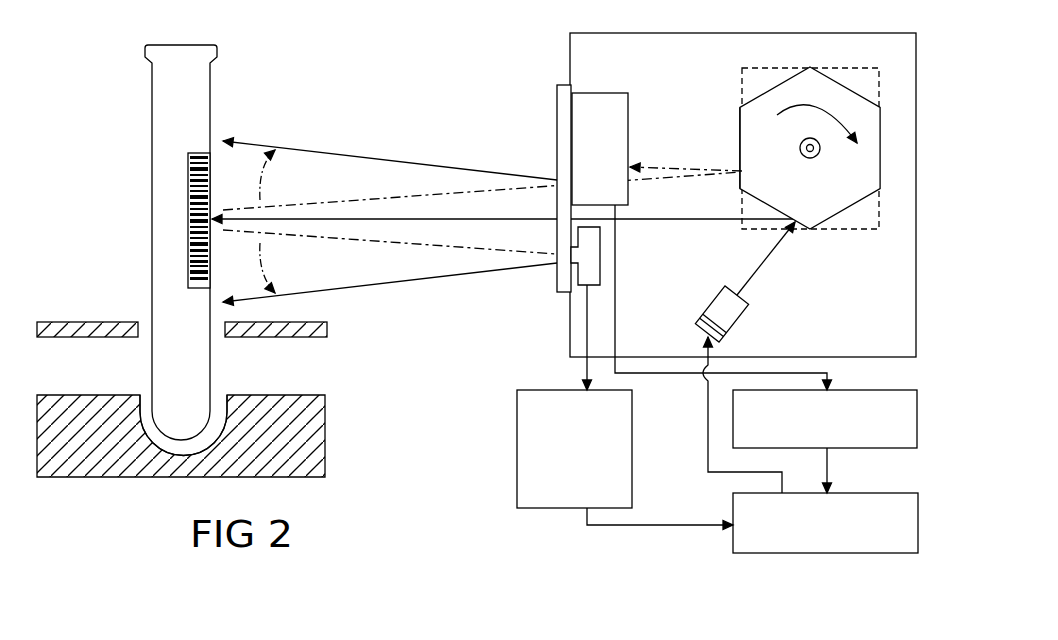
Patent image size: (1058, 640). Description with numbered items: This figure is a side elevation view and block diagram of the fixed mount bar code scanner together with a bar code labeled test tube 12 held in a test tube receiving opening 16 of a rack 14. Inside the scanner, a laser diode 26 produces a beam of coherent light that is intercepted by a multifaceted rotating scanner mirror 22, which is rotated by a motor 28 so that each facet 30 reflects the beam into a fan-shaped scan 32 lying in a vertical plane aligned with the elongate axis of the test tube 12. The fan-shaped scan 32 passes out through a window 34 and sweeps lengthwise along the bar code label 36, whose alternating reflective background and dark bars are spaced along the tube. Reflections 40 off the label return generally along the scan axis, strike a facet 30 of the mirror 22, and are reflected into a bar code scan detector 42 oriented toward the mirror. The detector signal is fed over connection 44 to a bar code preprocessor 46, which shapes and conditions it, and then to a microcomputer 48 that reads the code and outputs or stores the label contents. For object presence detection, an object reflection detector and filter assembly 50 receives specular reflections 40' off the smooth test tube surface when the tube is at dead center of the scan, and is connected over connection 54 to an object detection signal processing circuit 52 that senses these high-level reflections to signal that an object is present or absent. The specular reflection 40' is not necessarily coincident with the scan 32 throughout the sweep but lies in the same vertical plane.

The test tube 12 is at (213, 86).
The rack 14 is at (300, 340).
The test tube receiving opening 16 is at (147, 425).
The rotating scanner mirror 22 is at (760, 95).
The laser diode 26 is at (735, 325).
The motor 28 is at (868, 75).
The facet 30 is at (738, 160).
The fan-shaped scan 32 is at (312, 149).
The window 34 is at (525, 157).
The bar code label 36 is at (213, 170).
The reflections off the label 40 is at (482, 189).
The object specular reflection 40' is at (397, 252).
The bar code scan detector 42 is at (604, 92).
The connection 44 is at (617, 318).
The bar code preprocessor 46 is at (900, 450).
The microcomputer 48 is at (900, 555).
The object reflection detector and filter assembly 50 is at (573, 283).
The object detection signal processing circuit 52 is at (515, 470).
The connection 54 is at (575, 360).